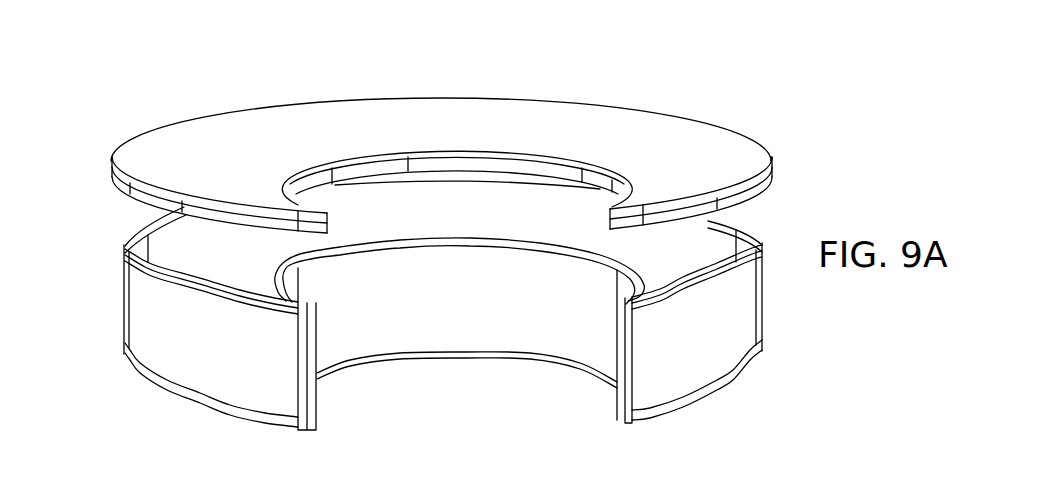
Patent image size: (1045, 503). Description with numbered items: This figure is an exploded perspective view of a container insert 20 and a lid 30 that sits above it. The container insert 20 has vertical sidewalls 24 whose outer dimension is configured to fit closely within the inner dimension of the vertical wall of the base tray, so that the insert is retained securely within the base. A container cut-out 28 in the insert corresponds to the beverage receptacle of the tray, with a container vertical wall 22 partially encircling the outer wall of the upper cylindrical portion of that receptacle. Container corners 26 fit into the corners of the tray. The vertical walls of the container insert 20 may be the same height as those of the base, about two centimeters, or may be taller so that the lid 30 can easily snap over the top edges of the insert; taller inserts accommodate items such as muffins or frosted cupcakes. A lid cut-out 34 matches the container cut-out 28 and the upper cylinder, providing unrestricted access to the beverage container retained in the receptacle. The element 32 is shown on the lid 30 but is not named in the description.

The container insert 20 is at (436, 324).
The container vertical wall 22 is at (437, 315).
The vertical sidewalls 24 is at (692, 368).
The container corners 26 is at (617, 393).
The container cut-out 28 is at (418, 391).
The lid 30 is at (471, 146).
The lid flange 32 is at (755, 181).
The lid cut-out 34 is at (453, 168).